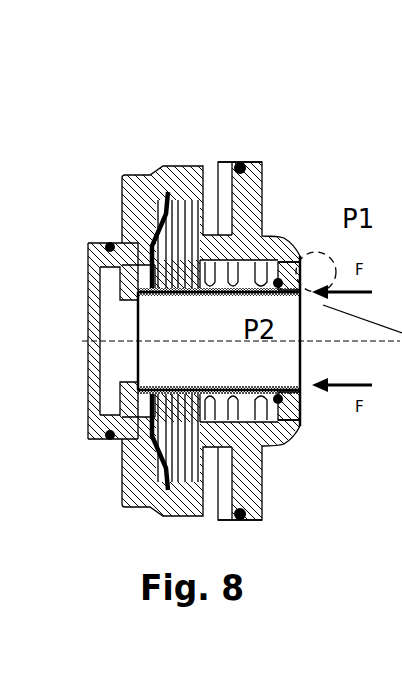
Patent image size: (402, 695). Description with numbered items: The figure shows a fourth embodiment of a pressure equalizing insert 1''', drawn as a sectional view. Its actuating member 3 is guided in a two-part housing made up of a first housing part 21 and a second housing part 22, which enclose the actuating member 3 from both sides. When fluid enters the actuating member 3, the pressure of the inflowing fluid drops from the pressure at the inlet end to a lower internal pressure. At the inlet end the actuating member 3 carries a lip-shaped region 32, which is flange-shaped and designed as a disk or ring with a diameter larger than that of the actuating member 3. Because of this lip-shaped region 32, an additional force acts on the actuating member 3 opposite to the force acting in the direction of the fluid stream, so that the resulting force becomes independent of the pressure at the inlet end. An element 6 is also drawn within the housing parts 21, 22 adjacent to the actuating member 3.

The housing part 21 is at (150, 174).
The housing part 22 is at (186, 185).
The spring element 6 is at (147, 240).
The pressure equalizing insert 1''' is at (82, 420).
The actuating member 3 is at (230, 392).
The lip-shaped region 32 is at (302, 405).